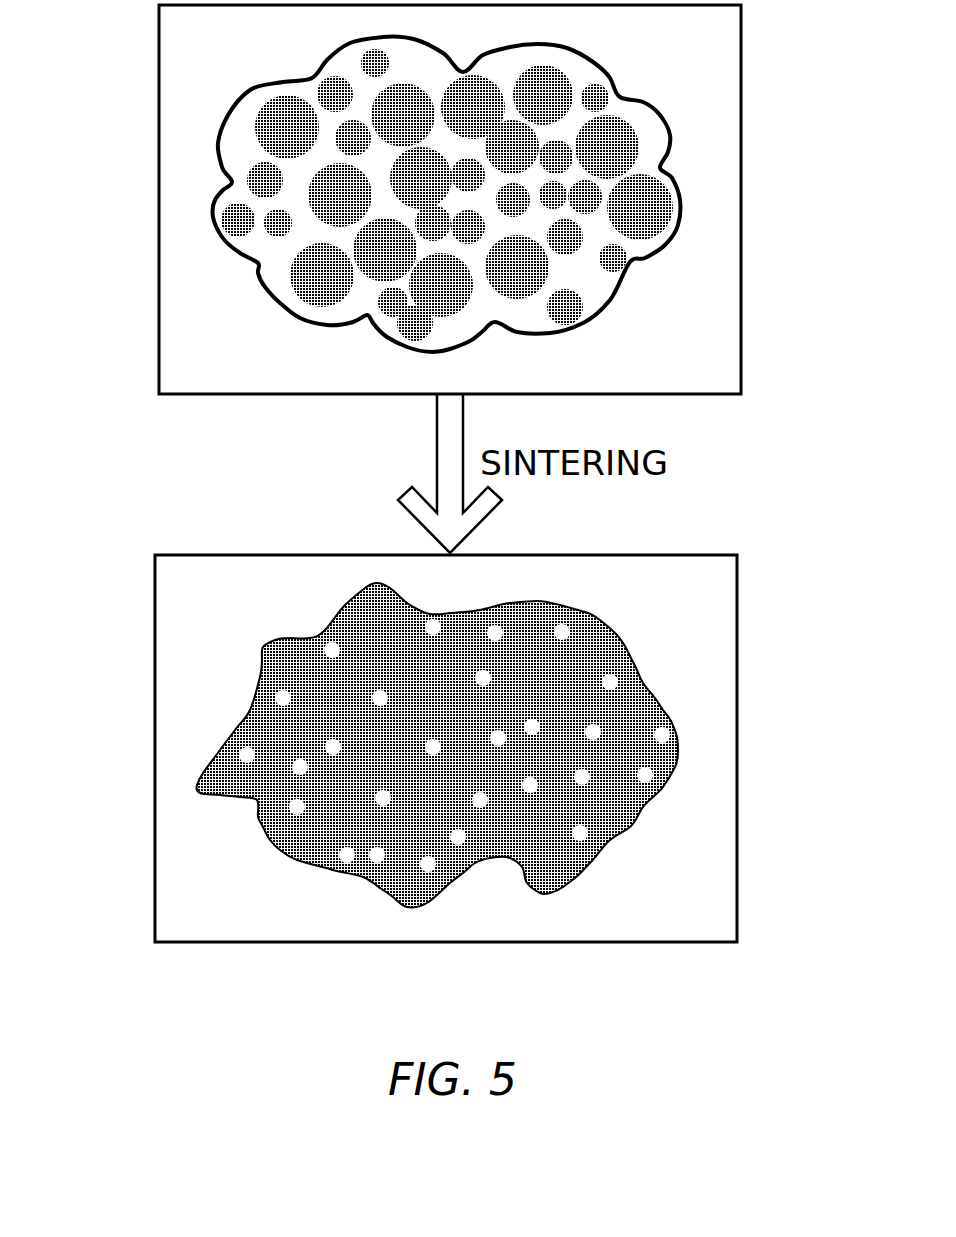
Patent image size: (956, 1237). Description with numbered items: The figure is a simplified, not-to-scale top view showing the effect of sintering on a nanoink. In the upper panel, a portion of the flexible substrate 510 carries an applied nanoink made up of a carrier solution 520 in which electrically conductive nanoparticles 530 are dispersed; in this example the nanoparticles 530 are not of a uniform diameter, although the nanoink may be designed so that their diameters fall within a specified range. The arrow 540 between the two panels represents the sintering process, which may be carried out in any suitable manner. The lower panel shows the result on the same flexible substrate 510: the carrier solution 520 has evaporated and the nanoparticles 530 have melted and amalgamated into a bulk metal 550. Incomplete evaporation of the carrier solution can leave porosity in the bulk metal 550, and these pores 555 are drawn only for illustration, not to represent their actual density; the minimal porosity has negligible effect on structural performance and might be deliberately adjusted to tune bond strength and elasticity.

The flexible substrate 510 is at (173, 82).
The carrier solution 520 is at (275, 272).
The electrically conductive nanoparticles 530 is at (557, 307).
The arrow 540 is at (395, 500).
The bulk metal 550 is at (315, 648).
The pores 555 is at (647, 778).